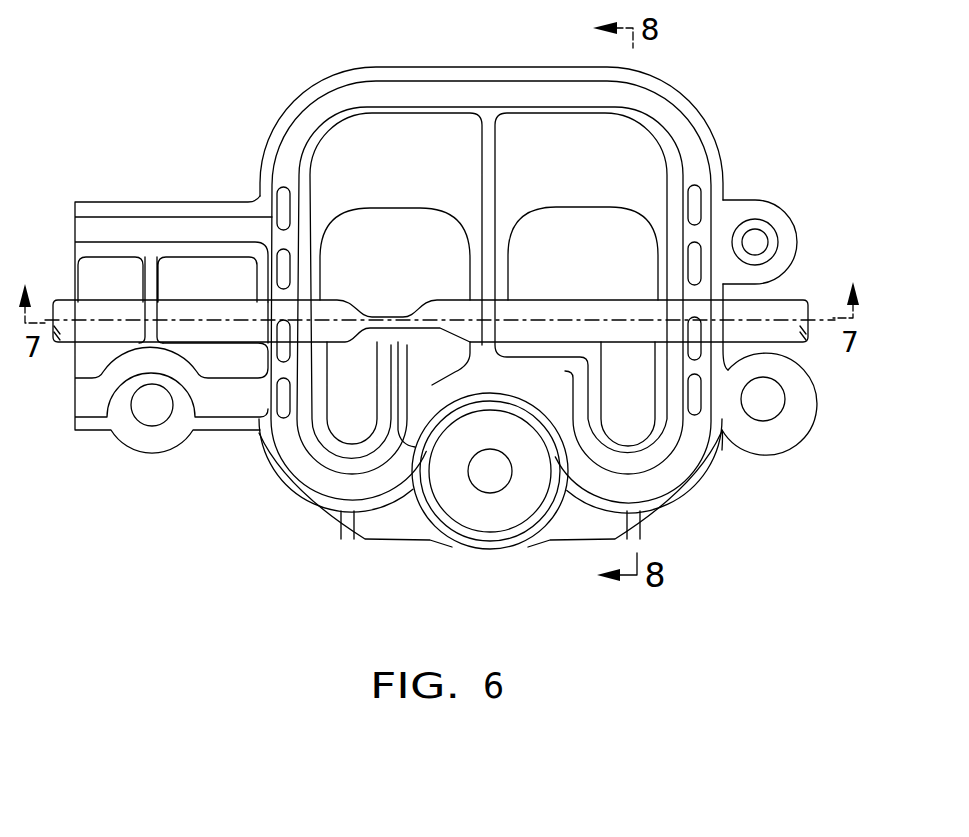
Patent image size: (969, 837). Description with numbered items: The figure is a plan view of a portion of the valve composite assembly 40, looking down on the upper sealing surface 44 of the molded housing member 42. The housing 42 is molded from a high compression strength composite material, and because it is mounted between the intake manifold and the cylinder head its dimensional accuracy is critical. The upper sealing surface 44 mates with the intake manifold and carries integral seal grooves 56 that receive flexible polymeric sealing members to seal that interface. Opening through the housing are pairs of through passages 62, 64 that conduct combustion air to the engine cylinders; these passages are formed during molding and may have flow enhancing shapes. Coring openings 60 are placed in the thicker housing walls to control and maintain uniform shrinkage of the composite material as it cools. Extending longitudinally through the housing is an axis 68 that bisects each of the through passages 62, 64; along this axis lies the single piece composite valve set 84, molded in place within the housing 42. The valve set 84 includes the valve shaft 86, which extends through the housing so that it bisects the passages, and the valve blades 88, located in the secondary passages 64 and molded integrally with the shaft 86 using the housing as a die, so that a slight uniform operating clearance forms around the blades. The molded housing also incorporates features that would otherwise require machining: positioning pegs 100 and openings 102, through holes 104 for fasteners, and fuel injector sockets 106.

The valve composite assembly 40 is at (795, 80).
The housing member 42 is at (724, 141).
The upper sealing surface 44 is at (670, 98).
The integral seal grooves 56 is at (660, 473).
The coring openings 60 is at (280, 258).
The through passages 62 is at (547, 130).
The through passages 64 is at (392, 128).
The axis 68 is at (817, 317).
The valve set 84 is at (364, 212).
The valve shaft 86 is at (790, 334).
The valve blades 88 is at (424, 227).
The pegs 100 is at (763, 225).
The openings 102 is at (175, 265).
The through holes 104 is at (152, 422).
The fuel injector sockets 106 is at (500, 517).